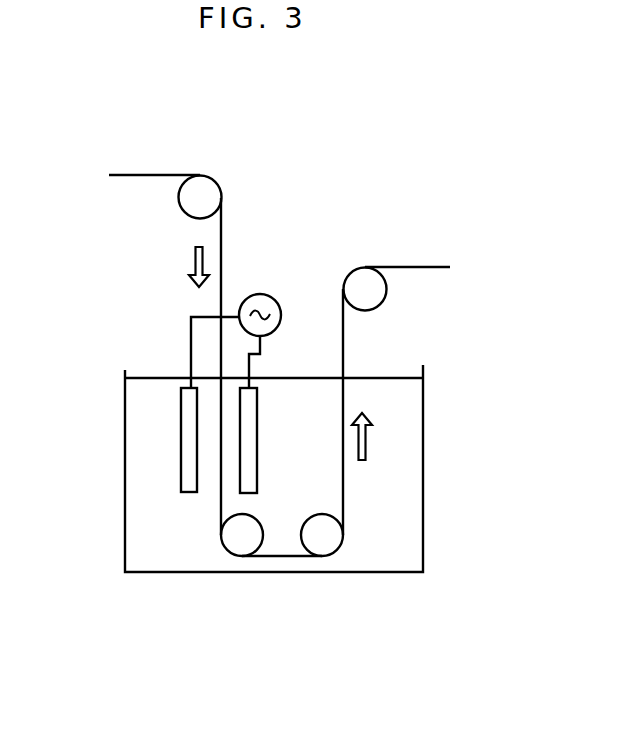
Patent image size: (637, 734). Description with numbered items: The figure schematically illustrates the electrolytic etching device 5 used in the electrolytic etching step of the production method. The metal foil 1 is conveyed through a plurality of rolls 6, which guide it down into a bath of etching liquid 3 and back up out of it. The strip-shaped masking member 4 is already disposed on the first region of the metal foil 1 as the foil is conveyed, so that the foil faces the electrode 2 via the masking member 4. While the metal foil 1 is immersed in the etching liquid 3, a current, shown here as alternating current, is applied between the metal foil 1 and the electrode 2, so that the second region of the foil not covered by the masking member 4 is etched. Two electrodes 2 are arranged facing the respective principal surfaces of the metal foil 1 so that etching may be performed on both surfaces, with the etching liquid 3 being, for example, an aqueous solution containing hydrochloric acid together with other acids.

The metal foil 1 is at (279, 330).
The masking member 4 is at (151, 173).
The electrode 2 is at (250, 467).
The etching liquid 3 is at (403, 495).
The electrolytic etching device 5 is at (392, 168).
The rolls 6 is at (197, 197).